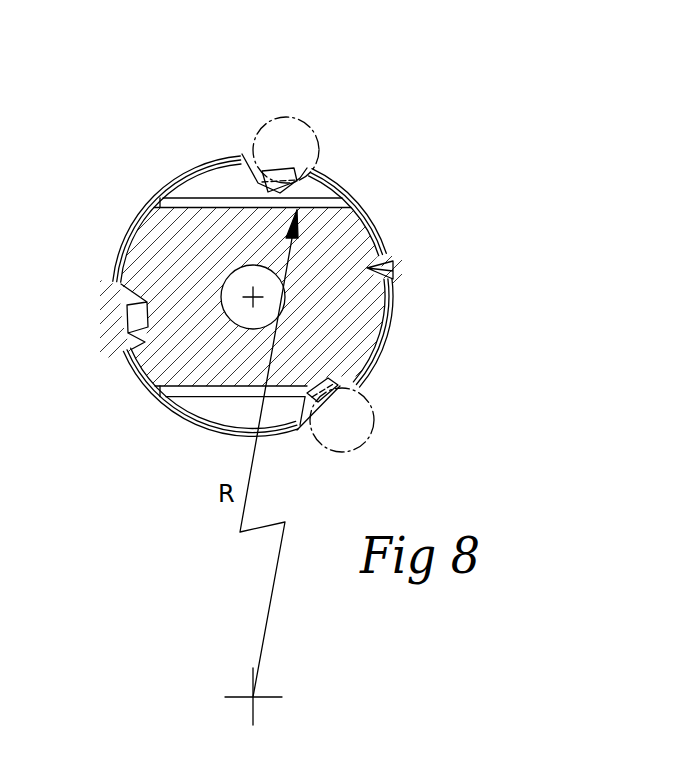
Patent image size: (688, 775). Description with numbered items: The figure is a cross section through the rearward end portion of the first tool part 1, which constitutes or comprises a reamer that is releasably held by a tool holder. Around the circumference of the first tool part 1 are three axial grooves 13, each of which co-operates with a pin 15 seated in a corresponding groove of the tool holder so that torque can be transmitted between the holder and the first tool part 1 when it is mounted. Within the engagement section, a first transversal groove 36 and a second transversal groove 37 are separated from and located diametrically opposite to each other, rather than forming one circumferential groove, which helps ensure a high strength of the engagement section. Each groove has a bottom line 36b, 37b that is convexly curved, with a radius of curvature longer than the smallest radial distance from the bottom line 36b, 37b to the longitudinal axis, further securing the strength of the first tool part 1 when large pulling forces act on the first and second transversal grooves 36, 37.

The first tool part 1 is at (332, 258).
The axial grooves 13 is at (312, 182).
The pin 15 is at (290, 118).
The first transversal groove 36 is at (237, 196).
The bottom line 36b is at (216, 207).
The second transversal groove 37 is at (277, 400).
The bottom line 37b is at (212, 390).